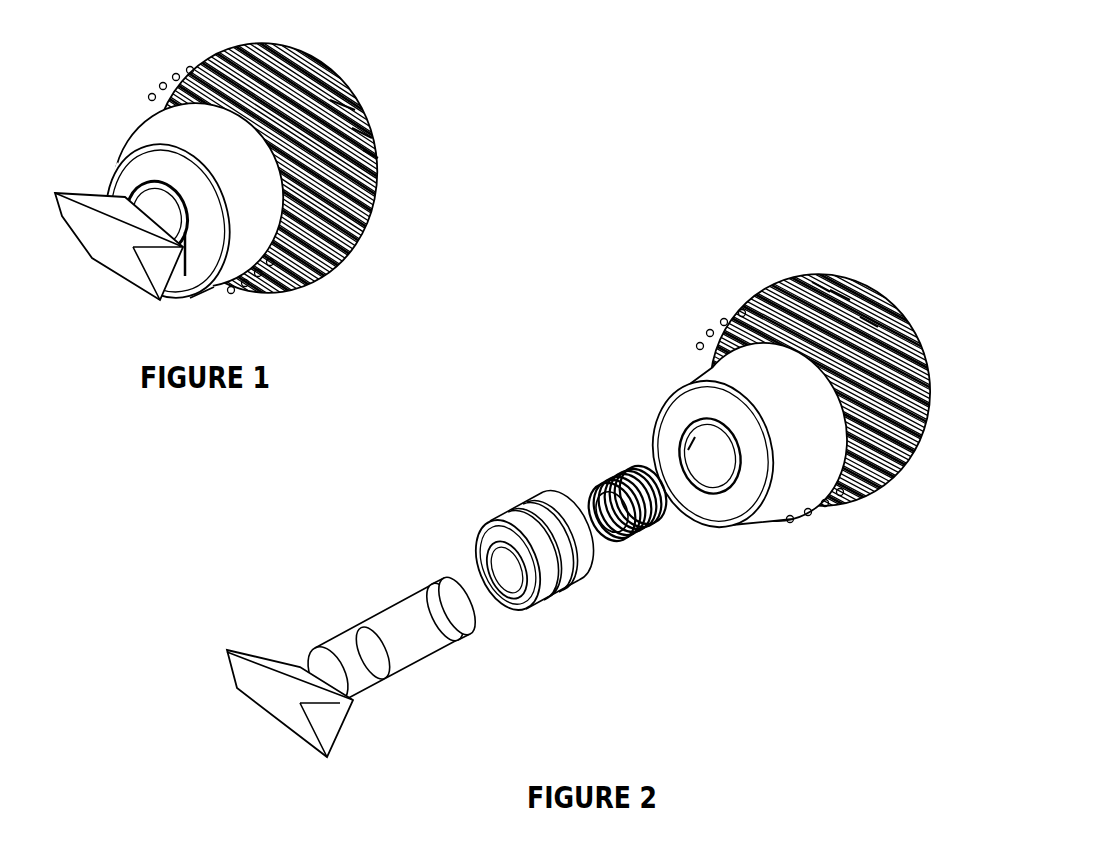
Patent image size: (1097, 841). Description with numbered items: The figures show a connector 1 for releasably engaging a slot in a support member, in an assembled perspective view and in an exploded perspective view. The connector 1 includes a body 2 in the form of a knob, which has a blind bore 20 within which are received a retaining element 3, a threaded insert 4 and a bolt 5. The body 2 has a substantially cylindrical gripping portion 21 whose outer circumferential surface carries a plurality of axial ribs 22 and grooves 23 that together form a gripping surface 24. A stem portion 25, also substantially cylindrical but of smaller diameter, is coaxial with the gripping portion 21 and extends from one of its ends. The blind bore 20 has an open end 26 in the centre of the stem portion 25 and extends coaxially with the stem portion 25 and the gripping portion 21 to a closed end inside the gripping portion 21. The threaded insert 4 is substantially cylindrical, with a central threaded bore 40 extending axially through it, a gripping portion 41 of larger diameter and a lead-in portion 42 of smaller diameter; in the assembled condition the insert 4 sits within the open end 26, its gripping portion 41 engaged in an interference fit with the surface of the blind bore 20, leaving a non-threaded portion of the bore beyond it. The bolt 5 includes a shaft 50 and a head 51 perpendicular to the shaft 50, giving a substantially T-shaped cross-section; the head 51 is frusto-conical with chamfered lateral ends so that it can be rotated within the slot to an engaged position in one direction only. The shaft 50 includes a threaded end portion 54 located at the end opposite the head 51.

In FIG. 1, the connector 1 is at (267, 197).
In FIG. 2, the connector 1 is at (616, 486).
In FIG. 1, the body 2 is at (265, 197).
In FIG. 2, the body 2 is at (816, 390).
In FIG. 2, the retaining element 3 is at (643, 538).
In FIG. 2, the threaded insert 4 is at (514, 555).
In FIG. 2, the bolt 5 is at (356, 676).
In FIG. 2, the blind bore 20 is at (731, 475).
In FIG. 1, the gripping portion 21 is at (340, 245).
In FIG. 2, the gripping portion 21 is at (887, 322).
In FIG. 1, the axial ribs 22 is at (190, 70).
In FIG. 2, the axial ribs 22 is at (742, 313).
In FIG. 1, the grooves 23 is at (330, 100).
In FIG. 2, the grooves 23 is at (860, 317).
In FIG. 2, the gripping surface 24 is at (790, 220).
In FIG. 1, the stem portion 25 is at (229, 226).
In FIG. 2, the stem portion 25 is at (800, 425).
In FIG. 2, the open end 26 is at (688, 450).
In FIG. 2, the central threaded bore 40 is at (503, 565).
In FIG. 2, the gripping portion 41 is at (503, 533).
In FIG. 2, the lead-in portion 42 is at (553, 517).
In FIG. 2, the shaft 50 is at (397, 627).
In FIG. 1, the head 51 is at (120, 246).
In FIG. 2, the head 51 is at (273, 710).
In FIG. 2, the threaded end portion 54 is at (465, 621).